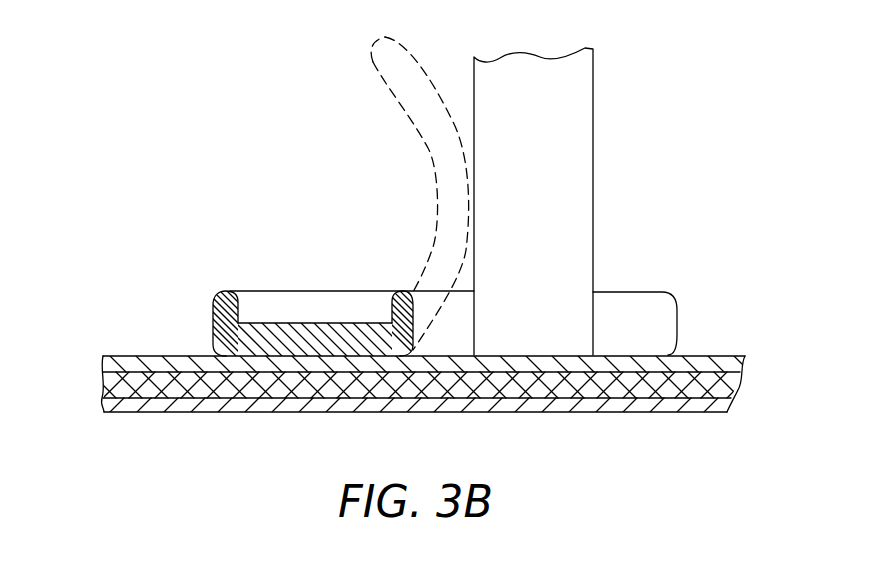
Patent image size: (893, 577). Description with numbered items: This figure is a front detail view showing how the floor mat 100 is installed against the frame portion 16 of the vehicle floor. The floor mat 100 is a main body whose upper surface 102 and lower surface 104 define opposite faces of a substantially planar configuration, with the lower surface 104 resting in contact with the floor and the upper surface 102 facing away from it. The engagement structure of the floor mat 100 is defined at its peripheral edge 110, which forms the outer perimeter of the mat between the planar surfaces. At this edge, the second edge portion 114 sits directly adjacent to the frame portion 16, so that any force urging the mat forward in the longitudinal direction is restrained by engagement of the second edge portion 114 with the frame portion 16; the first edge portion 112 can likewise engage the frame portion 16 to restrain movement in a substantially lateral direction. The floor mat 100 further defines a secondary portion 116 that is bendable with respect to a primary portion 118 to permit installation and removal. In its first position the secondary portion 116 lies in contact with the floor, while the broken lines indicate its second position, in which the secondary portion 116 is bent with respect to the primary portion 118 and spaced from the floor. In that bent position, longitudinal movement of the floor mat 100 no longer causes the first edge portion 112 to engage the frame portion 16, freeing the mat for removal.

The floor mat 100 is at (410, 340).
The upper surface 102 is at (343, 308).
The lower surface 104 is at (253, 357).
The peripheral edge 110 is at (213, 331).
The first edge portion 112 is at (428, 120).
The second edge portion 114 is at (400, 313).
The secondary portion 116 is at (693, 303).
The primary portion 118 is at (320, 262).
The frame portion 16 is at (593, 113).